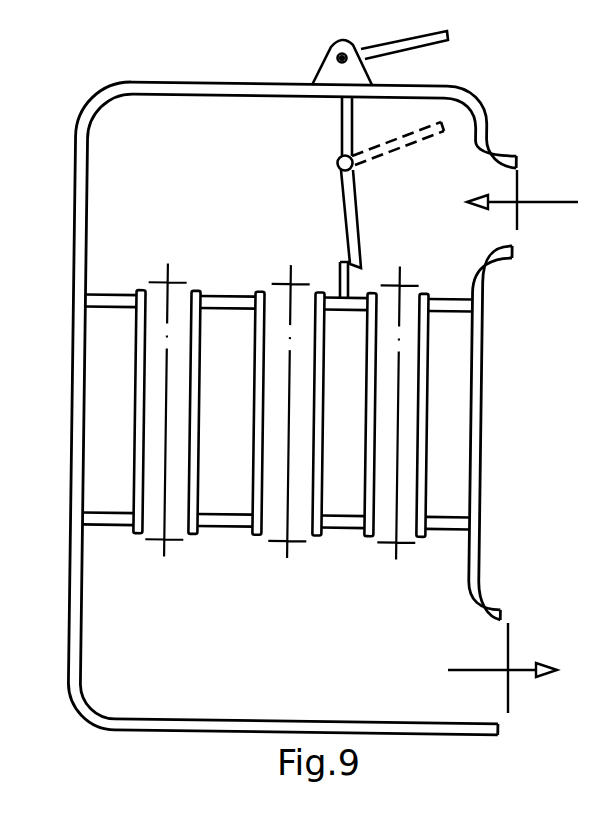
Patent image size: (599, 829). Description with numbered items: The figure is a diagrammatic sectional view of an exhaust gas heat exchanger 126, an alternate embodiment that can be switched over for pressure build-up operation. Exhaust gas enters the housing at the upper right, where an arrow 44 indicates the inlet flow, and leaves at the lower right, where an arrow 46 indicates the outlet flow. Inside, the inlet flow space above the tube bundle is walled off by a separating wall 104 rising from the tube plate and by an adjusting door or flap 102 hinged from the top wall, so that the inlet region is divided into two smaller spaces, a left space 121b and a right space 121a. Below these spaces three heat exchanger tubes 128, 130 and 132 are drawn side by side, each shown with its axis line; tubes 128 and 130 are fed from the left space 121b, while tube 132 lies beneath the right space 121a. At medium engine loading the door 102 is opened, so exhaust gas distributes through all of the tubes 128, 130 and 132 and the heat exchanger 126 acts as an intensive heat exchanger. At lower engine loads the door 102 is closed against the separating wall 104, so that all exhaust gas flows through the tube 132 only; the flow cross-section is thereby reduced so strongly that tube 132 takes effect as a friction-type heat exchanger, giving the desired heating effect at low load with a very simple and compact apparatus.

The heat exchanger 126 is at (74, 138).
The smaller inlet flow space 121b is at (228, 191).
The smaller inlet flow space 121a is at (440, 204).
The adjusting door or flap 102 is at (343, 219).
The separating wall 104 is at (340, 273).
The heat exchanger tube 128 is at (183, 530).
The heat exchanger tube 130 is at (281, 534).
The heat exchanger tube 132 is at (390, 534).
The inlet flow direction 44 is at (519, 181).
The outlet flow direction 46 is at (510, 637).